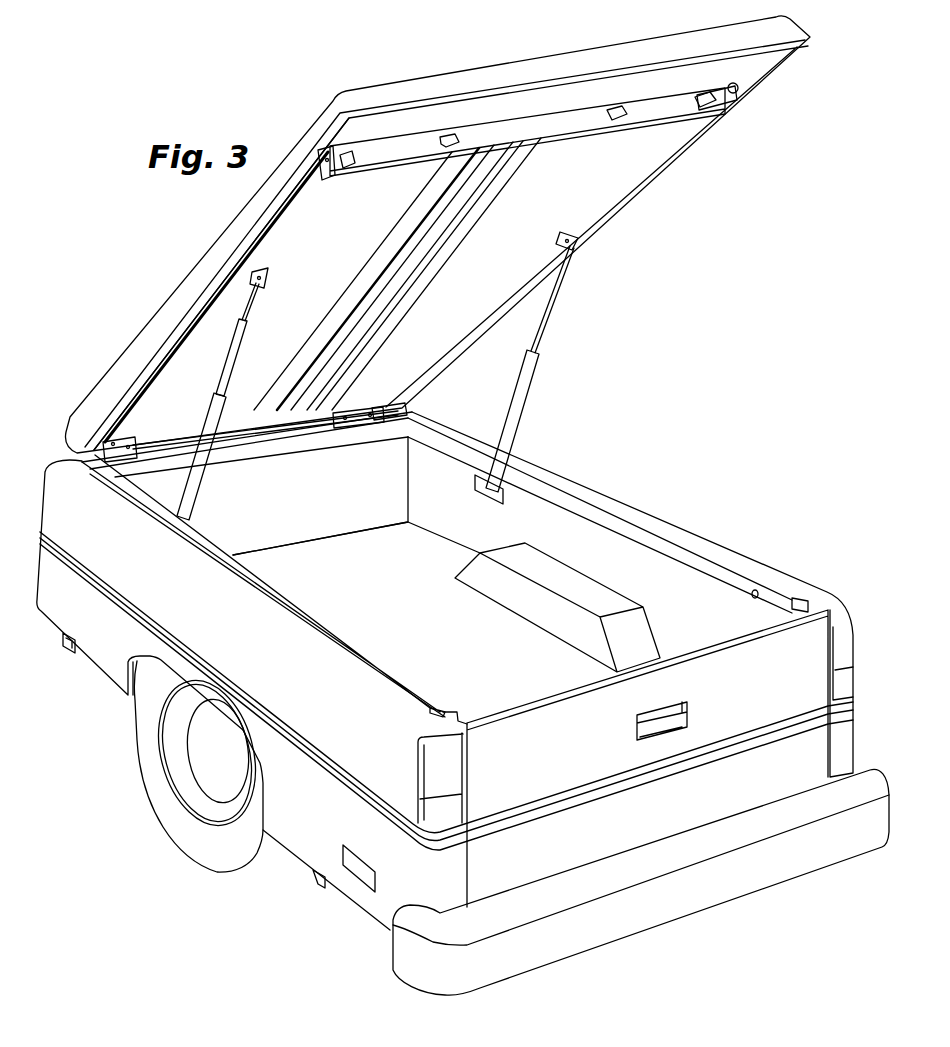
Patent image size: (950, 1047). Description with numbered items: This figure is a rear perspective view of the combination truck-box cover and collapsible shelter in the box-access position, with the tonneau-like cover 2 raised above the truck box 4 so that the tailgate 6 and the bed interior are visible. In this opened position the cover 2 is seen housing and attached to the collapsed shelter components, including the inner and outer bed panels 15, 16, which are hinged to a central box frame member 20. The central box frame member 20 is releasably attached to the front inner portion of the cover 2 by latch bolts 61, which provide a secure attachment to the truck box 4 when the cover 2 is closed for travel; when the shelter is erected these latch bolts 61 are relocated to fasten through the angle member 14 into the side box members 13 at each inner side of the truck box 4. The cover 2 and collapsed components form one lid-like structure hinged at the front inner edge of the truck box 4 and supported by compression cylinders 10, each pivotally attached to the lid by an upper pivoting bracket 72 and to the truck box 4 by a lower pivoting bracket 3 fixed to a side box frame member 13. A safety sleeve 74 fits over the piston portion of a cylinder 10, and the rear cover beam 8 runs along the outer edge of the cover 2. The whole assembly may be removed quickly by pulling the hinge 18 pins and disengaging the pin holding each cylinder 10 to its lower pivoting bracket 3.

The tonneau-like cover 2 is at (381, 90).
The lower pivoting bracket 3 is at (477, 490).
The truck box 4 is at (842, 587).
The tailgate 6 is at (517, 737).
The rear cover beam 8 is at (678, 107).
The compression cylinder 10 is at (200, 478).
The side box frame member 13 is at (412, 690).
The angle member 14 is at (310, 183).
The inner bed panel 15 is at (227, 323).
The outer bed panel 16 is at (100, 374).
The hinge 18 is at (122, 442).
The central box frame member 20 is at (270, 447).
The latch bolt 61 is at (147, 438).
The upper pivoting bracket 72 is at (268, 277).
The safety sleeve 74 is at (227, 350).